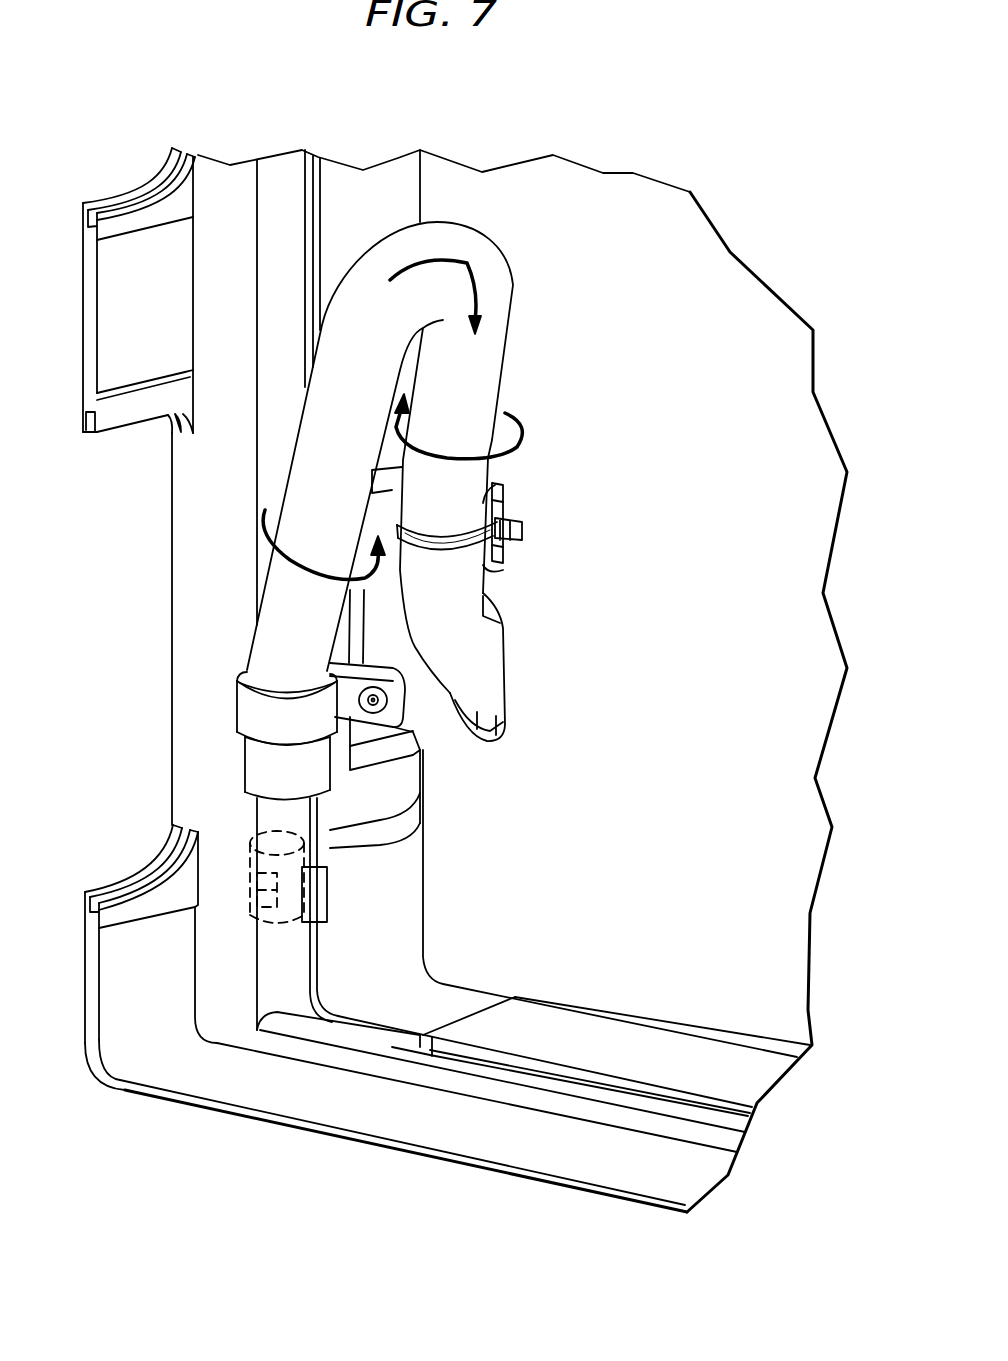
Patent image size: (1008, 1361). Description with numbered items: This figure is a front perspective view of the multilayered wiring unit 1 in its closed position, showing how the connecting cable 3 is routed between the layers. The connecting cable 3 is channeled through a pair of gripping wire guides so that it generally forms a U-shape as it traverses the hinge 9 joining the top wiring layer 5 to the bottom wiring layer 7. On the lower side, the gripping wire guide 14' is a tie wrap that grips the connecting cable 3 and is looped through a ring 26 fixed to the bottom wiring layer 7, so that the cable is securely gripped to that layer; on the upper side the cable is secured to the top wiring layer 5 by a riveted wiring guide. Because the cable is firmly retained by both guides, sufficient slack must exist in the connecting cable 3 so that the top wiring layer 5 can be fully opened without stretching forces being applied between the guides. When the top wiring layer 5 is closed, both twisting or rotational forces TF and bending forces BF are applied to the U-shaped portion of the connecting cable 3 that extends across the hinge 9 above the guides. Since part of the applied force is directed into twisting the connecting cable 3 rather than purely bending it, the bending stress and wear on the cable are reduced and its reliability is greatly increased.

The multilayered wiring unit 1 is at (264, 1145).
The connecting cable 3 is at (490, 358).
The top wiring layer 5 is at (205, 617).
The bottom wiring layer 7 is at (782, 953).
The hinge 9 is at (250, 858).
The gripping wire guide 14' is at (495, 554).
The ring 26 is at (500, 492).
The bending forces BF is at (480, 248).
The twisting or rotational forces TF is at (527, 430).